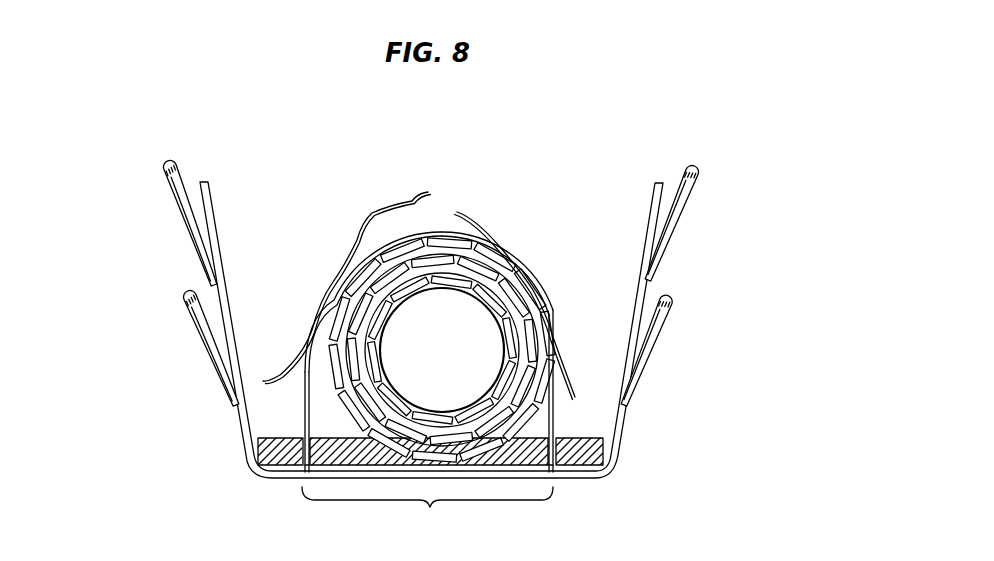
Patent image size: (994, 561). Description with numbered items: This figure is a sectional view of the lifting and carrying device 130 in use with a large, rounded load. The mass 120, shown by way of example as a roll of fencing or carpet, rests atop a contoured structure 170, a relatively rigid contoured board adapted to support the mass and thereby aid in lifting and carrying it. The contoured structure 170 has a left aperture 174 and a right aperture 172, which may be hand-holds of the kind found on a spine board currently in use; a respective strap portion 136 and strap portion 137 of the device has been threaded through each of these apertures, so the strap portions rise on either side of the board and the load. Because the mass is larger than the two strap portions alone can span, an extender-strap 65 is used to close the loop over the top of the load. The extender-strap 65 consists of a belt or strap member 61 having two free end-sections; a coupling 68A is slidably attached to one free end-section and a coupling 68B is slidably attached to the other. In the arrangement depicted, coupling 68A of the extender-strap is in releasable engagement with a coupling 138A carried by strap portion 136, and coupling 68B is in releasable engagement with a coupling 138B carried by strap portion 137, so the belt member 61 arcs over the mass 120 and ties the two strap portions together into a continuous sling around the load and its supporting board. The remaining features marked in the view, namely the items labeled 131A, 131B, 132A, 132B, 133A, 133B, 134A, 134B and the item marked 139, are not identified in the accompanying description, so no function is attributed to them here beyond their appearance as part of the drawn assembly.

The device 130 is at (746, 148).
The first clamp rod 131A is at (172, 160).
The second clamp rod 131B is at (186, 302).
The rod tab 132A is at (683, 212).
The rod tab 132B is at (662, 328).
The first clamp rod 133A is at (693, 160).
The second clamp rod 133B is at (670, 296).
The rod tab 134A is at (176, 214).
The rod tab 134B is at (205, 352).
The strap portion 136 is at (303, 388).
The strap portion 137 is at (555, 418).
The coupling 138A is at (318, 302).
The coupling 138B is at (545, 307).
The housing width 139 is at (427, 513).
The belt/strap member 61 is at (436, 232).
The extender-strap 65 is at (500, 210).
The coupling 68A is at (322, 300).
The coupling 68B is at (528, 293).
The mass 120 is at (440, 290).
The contoured structure 170 is at (603, 440).
The right aperture 172 is at (556, 470).
The left aperture 174 is at (300, 468).